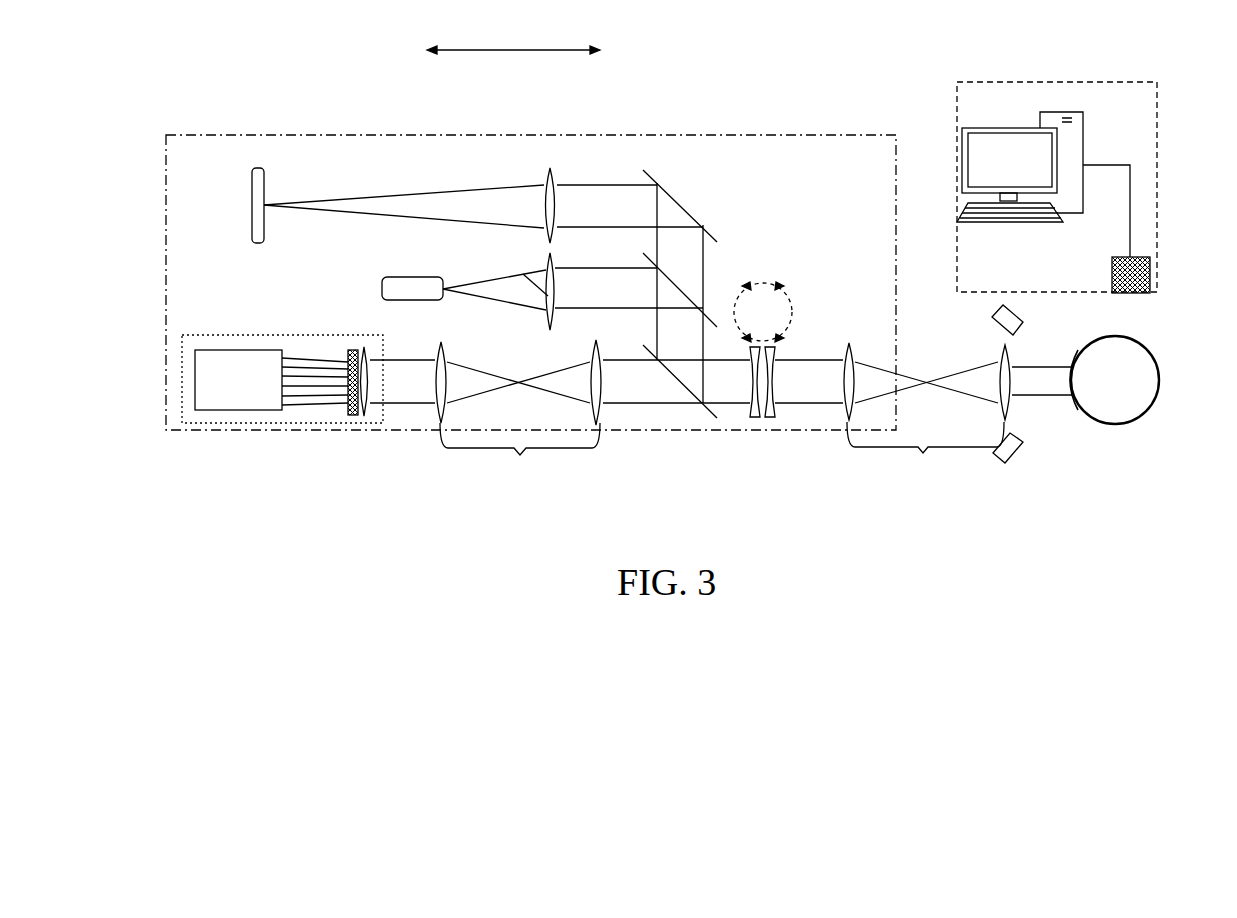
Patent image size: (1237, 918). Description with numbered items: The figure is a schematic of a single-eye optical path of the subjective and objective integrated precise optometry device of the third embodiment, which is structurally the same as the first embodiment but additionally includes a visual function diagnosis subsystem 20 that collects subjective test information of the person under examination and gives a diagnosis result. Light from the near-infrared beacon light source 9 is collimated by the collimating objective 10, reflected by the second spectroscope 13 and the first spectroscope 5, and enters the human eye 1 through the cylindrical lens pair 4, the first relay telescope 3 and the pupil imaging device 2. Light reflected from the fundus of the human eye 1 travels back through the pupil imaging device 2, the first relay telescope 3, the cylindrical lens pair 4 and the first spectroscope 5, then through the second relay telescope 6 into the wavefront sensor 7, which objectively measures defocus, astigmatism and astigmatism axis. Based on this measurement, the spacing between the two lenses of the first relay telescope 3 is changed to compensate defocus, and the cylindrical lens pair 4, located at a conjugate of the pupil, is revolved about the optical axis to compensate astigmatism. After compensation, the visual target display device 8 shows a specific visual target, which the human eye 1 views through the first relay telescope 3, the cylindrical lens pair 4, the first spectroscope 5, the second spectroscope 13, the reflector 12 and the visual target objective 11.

The human eye 1 is at (1132, 422).
The pupil imaging device 2 is at (1017, 455).
The first relay telescope 3 is at (927, 419).
The cylindrical lens pair 4 is at (763, 417).
The first spectroscope 5 is at (687, 392).
The second relay telescope 6 is at (518, 418).
The wavefront sensor 7 is at (245, 335).
The visual target display device 8 is at (257, 200).
The near-infrared beacon light source 9 is at (403, 277).
The collimating objective 10 is at (527, 275).
The visual target objective 11 is at (537, 187).
The reflector 12 is at (670, 197).
The second spectroscope 13 is at (673, 287).
The visual function diagnosis subsystem 20 is at (1160, 135).